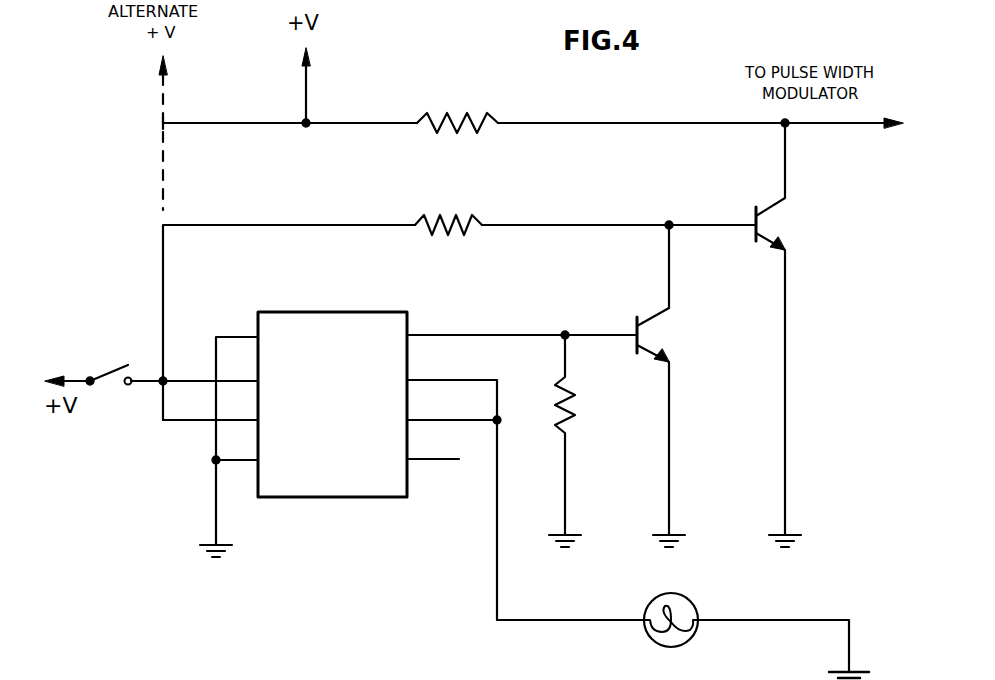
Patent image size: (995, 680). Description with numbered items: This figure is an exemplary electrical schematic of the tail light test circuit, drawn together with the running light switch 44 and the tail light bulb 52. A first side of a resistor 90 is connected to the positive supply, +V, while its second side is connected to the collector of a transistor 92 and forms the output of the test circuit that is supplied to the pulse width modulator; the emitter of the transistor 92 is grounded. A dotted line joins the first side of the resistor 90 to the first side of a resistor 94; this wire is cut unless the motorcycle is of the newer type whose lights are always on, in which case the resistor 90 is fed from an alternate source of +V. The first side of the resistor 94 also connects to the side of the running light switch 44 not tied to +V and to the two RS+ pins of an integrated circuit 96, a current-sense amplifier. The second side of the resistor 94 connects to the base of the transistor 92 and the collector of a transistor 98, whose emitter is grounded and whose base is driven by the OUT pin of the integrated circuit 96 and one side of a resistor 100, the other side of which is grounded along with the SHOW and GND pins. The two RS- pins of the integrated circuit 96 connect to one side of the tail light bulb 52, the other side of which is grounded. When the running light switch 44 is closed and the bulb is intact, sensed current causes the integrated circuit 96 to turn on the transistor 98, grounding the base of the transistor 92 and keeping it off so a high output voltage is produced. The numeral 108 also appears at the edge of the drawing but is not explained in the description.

The running light switch 44 is at (103, 366).
The tail light bulb 52 is at (680, 607).
The resistor 90 is at (483, 95).
The transistor 92 is at (768, 227).
The resistor 94 is at (463, 218).
The integrated circuit 96 is at (340, 498).
The transistor 98 is at (650, 336).
The resistor 100 is at (570, 428).
The circuit element 108 is at (277, 672).